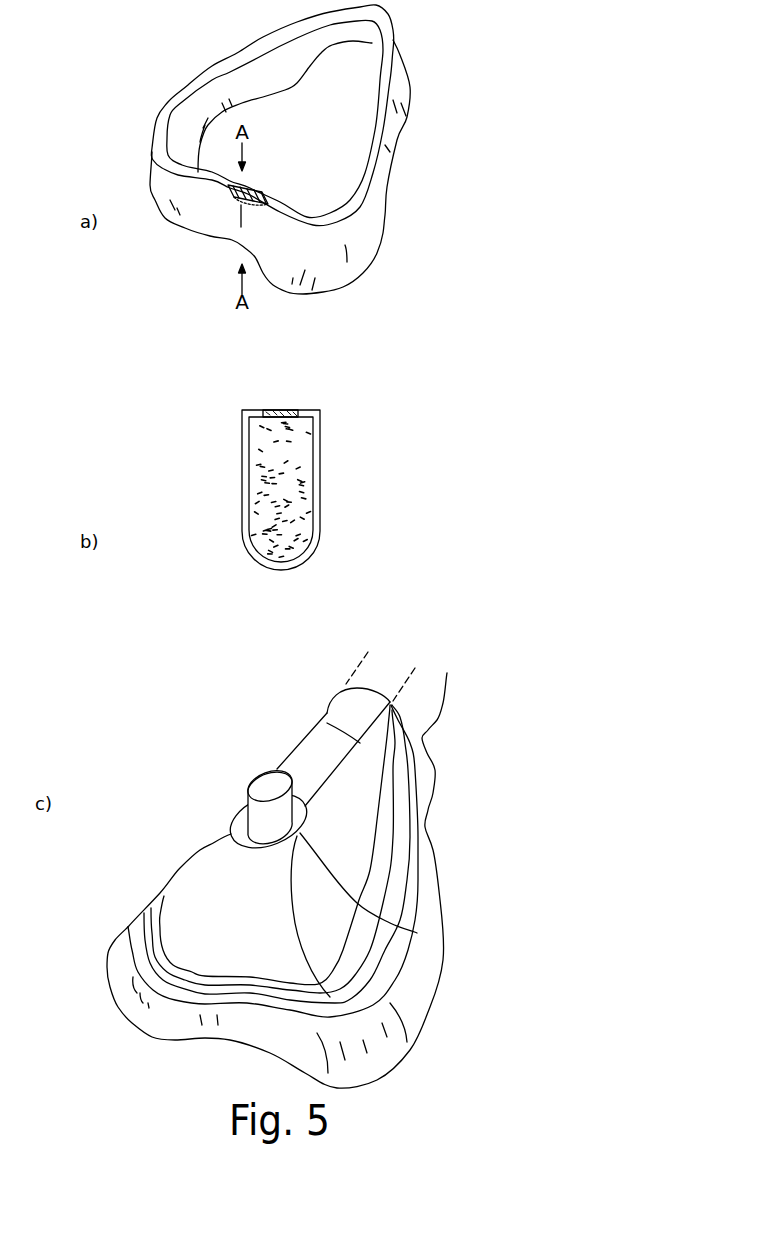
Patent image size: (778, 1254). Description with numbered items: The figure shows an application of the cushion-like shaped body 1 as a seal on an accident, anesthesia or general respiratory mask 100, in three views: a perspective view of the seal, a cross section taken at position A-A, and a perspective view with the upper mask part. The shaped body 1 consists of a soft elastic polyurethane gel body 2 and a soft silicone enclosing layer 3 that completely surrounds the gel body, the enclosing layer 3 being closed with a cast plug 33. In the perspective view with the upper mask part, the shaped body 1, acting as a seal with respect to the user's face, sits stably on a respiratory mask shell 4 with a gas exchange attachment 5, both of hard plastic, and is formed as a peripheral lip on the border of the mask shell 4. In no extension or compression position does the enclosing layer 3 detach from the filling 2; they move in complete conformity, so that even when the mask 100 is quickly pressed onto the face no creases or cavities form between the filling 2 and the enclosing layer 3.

The cushion-like shaped body 1 is at (404, 218).
The polyurethane gel body 2 is at (303, 520).
The silicone enclosing layer 3 is at (193, 222).
The respiratory mask shell 4 is at (224, 853).
The gas exchange attachment 5 is at (268, 770).
The cast plug 33 is at (259, 190).
The respiratory mask 100 is at (463, 849).